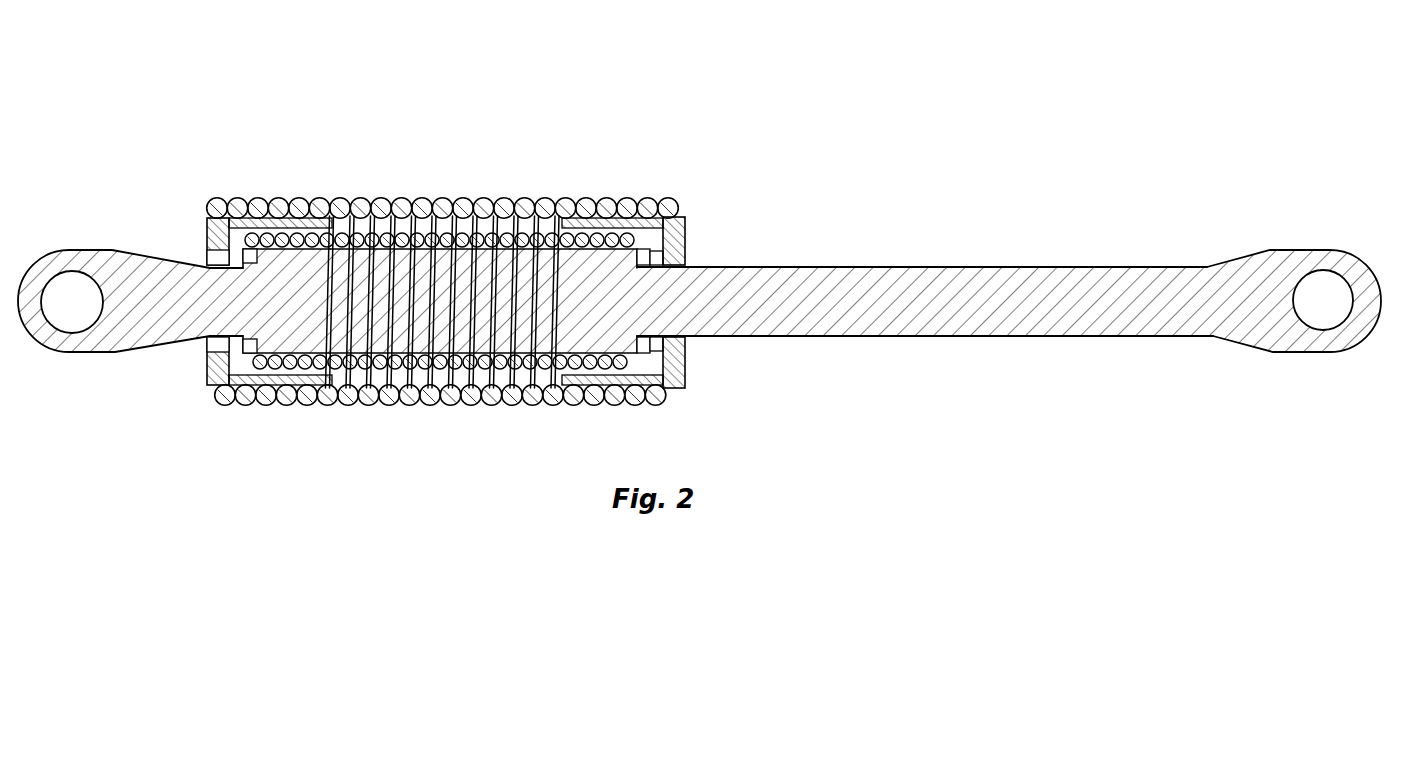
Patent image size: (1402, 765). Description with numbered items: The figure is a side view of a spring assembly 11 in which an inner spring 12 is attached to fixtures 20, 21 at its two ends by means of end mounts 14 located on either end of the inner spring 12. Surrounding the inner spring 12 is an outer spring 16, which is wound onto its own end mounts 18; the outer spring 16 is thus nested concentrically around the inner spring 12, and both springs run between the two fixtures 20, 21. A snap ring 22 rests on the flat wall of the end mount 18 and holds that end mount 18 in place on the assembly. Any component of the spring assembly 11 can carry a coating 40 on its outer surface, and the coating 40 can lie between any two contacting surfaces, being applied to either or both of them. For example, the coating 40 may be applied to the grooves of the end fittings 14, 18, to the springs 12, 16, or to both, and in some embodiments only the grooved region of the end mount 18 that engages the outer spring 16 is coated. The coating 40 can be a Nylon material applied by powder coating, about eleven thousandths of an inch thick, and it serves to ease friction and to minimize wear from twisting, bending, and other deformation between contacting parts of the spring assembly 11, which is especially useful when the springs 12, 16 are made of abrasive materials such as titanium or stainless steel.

The spring assembly 11 is at (699, 312).
The inner spring 12 is at (400, 292).
The end mount 14 is at (257, 257).
The outer spring 16 is at (490, 395).
The end mount 18 is at (677, 367).
The fixture 20 is at (1227, 302).
The fixture 21 is at (112, 337).
The snap ring 22 is at (658, 258).
The coating 40 is at (270, 263).